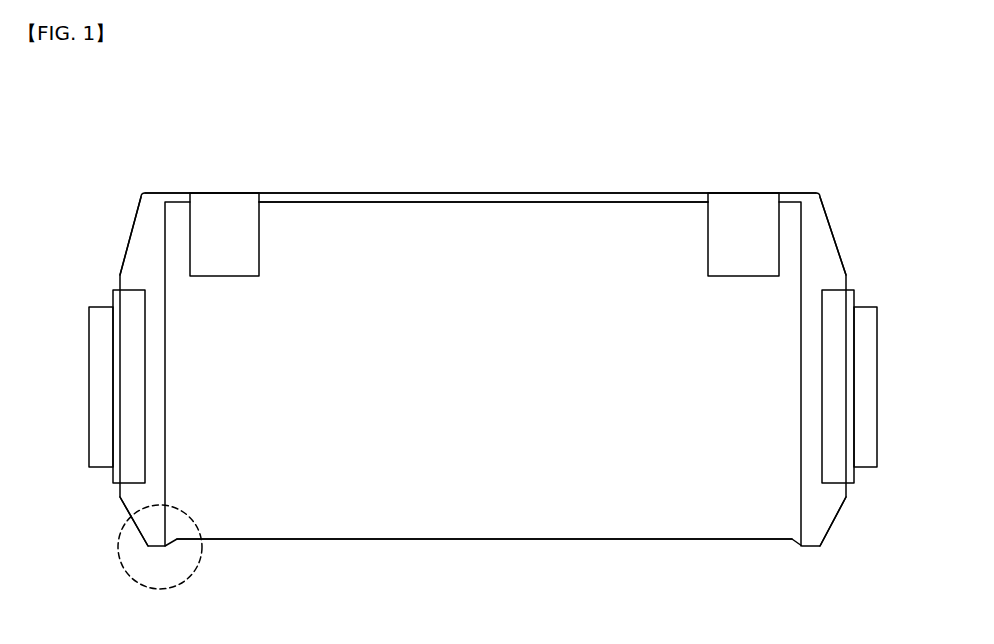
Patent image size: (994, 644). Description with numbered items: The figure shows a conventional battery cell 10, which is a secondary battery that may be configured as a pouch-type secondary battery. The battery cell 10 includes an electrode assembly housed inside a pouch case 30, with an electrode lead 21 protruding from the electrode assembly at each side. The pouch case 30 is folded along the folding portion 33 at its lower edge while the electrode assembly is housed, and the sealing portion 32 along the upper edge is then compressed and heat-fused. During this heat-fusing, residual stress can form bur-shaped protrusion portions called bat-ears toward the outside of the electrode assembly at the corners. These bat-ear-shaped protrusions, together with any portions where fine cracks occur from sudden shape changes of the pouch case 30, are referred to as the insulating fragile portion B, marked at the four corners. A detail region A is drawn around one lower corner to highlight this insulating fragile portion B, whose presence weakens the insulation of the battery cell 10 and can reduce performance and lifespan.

The battery cell 10 is at (238, 90).
The electrode lead 21 is at (100, 386).
The pouch case 30 is at (593, 185).
The sealing portion 32 is at (347, 200).
The folding portion 33 is at (394, 541).
The enlarged portion A is at (135, 578).
The insulating fragile portion B is at (150, 199).